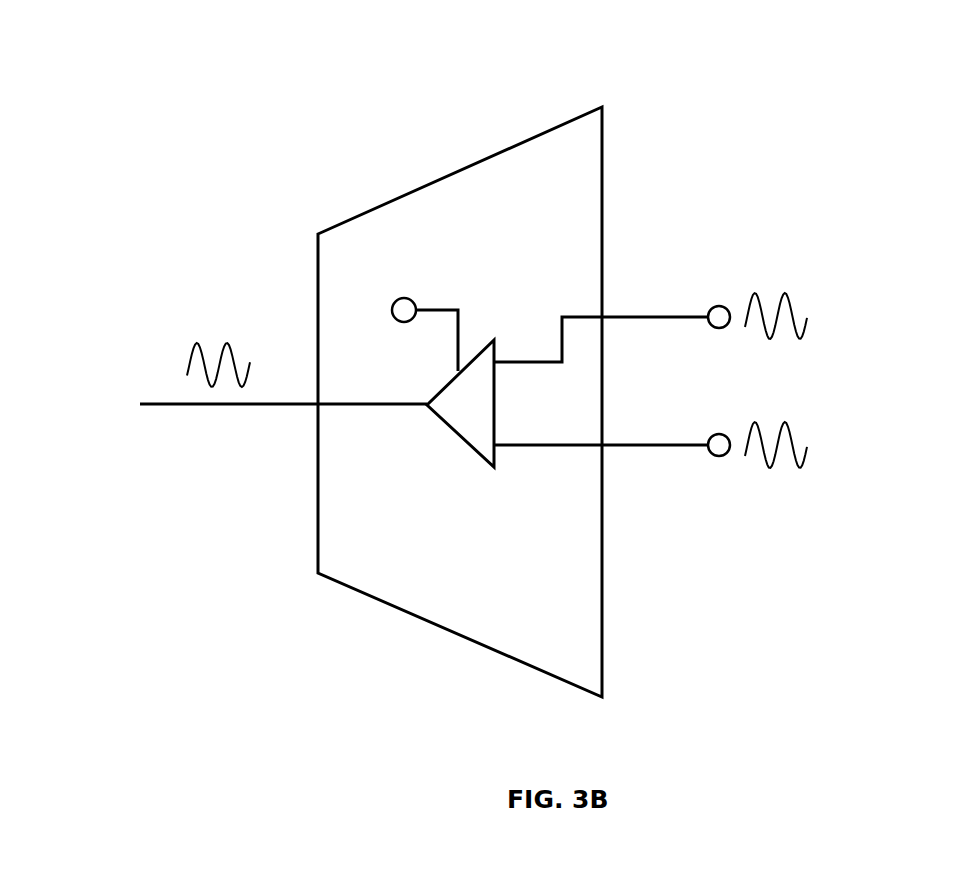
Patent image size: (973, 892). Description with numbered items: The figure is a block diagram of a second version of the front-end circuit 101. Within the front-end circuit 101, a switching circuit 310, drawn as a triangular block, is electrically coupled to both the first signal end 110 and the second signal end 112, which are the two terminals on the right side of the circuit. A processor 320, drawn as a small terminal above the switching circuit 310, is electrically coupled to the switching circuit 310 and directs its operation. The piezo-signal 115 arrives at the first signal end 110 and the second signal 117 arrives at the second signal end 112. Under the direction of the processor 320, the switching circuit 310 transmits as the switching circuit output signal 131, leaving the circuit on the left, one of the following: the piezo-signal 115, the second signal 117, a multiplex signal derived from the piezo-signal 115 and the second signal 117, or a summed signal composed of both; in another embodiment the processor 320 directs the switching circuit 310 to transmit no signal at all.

The front-end circuit 101 is at (457, 172).
The processor 320 is at (401, 298).
The switching circuit 310 is at (494, 396).
The switching circuit output signal 131 is at (222, 333).
The first signal end 110 is at (712, 306).
The piezo-signal 115 is at (817, 317).
The second signal end 112 is at (719, 456).
The second signal 117 is at (817, 447).